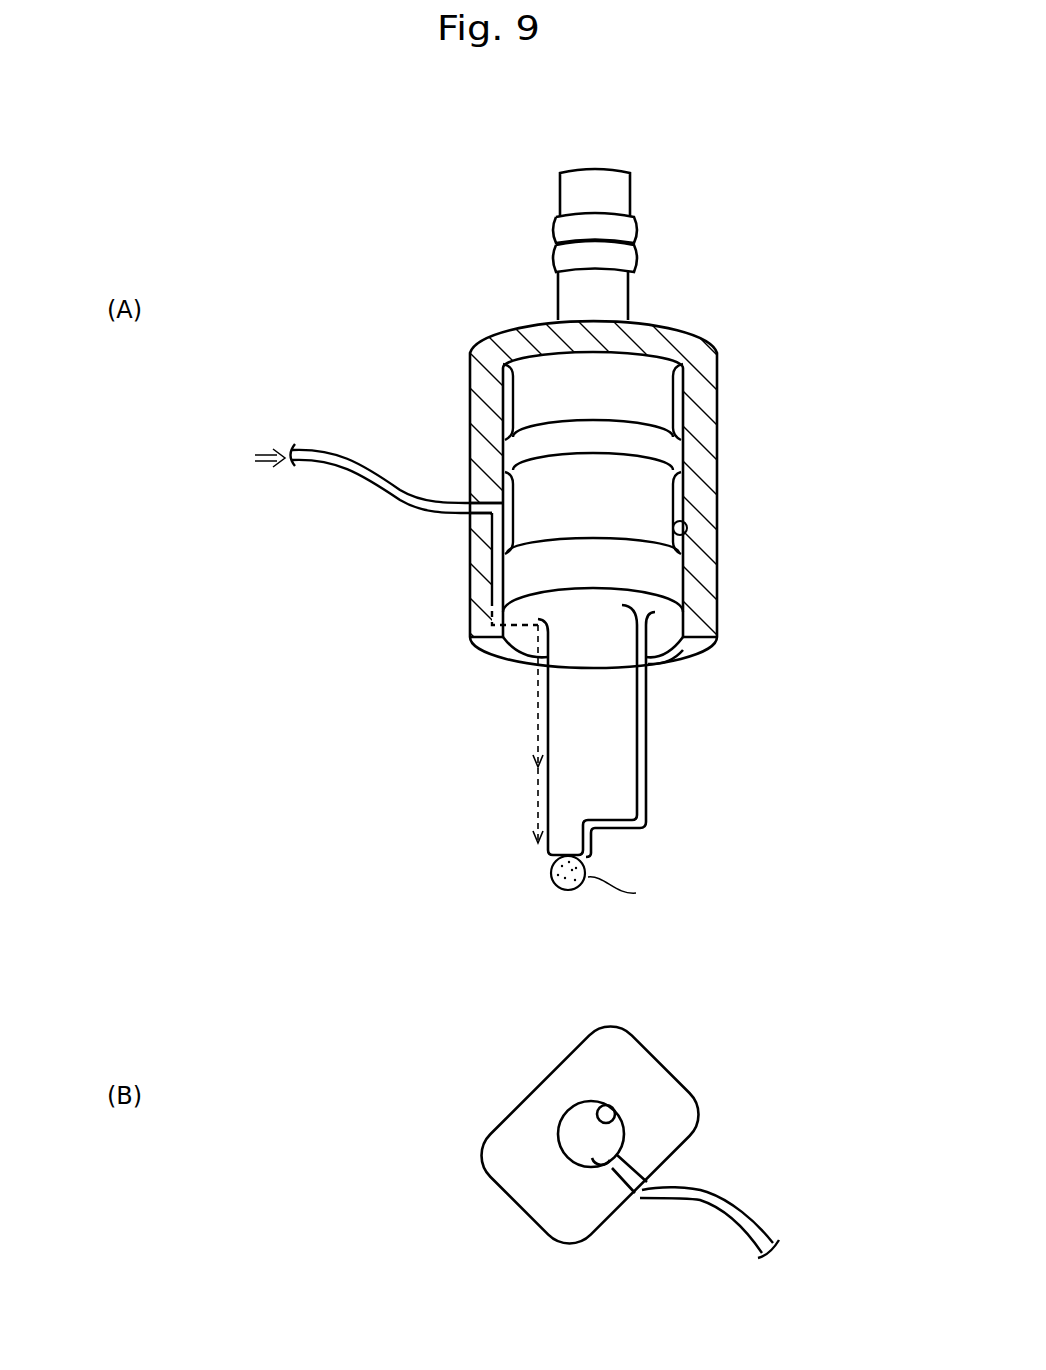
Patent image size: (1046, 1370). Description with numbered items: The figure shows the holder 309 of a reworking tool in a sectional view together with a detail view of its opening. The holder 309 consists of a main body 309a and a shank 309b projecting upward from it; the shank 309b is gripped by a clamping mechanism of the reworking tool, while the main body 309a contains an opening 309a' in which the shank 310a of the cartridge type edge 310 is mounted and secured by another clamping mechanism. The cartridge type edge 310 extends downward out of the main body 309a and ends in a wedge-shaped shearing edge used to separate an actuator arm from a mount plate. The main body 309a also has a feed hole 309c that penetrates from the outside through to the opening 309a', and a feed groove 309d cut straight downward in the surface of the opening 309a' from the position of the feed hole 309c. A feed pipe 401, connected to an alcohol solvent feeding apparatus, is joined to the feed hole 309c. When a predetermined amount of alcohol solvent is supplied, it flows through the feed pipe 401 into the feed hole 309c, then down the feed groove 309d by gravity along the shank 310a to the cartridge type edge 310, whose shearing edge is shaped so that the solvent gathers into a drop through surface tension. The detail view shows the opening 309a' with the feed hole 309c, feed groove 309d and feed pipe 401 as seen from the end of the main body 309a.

The holder 309 is at (631, 639).
The main body 309a is at (631, 639).
The opening 309a' is at (695, 844).
The shank 309b is at (620, 193).
The feed hole 309c is at (485, 500).
The feed groove 309d is at (498, 548).
The cartridge type edge 310 is at (676, 722).
The shank of the cartridge type edge 310a is at (650, 500).
The feed pipe 401 is at (330, 450).